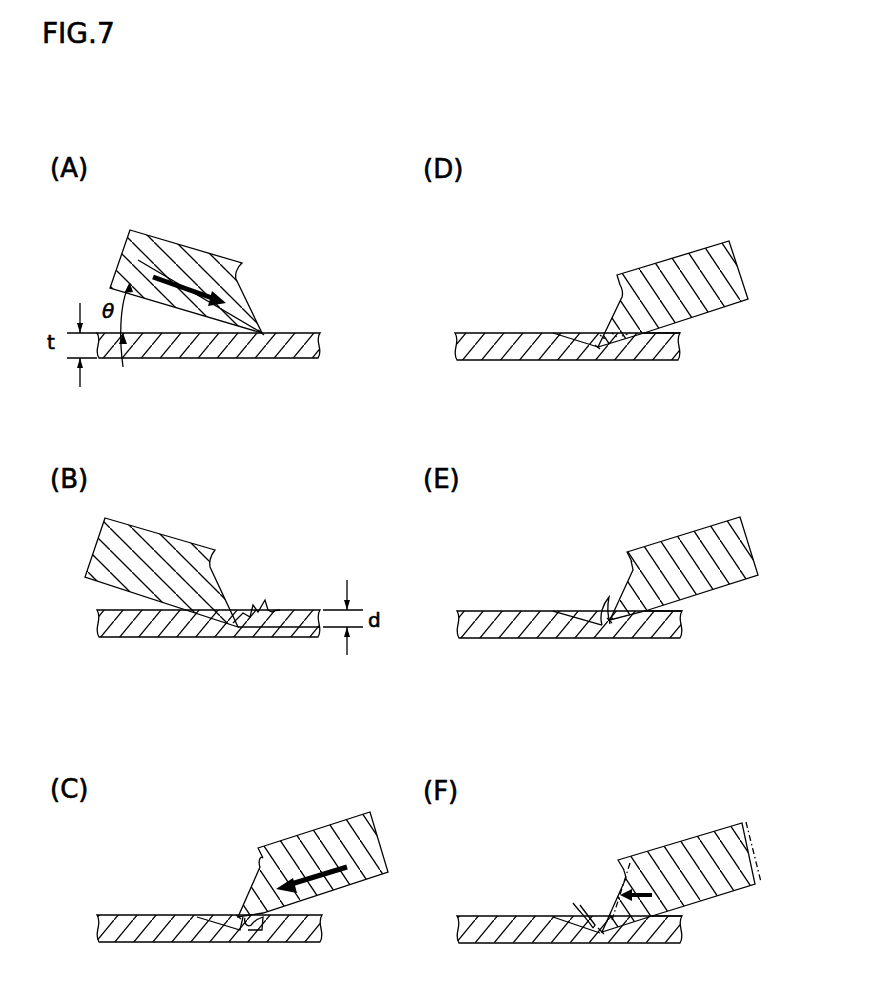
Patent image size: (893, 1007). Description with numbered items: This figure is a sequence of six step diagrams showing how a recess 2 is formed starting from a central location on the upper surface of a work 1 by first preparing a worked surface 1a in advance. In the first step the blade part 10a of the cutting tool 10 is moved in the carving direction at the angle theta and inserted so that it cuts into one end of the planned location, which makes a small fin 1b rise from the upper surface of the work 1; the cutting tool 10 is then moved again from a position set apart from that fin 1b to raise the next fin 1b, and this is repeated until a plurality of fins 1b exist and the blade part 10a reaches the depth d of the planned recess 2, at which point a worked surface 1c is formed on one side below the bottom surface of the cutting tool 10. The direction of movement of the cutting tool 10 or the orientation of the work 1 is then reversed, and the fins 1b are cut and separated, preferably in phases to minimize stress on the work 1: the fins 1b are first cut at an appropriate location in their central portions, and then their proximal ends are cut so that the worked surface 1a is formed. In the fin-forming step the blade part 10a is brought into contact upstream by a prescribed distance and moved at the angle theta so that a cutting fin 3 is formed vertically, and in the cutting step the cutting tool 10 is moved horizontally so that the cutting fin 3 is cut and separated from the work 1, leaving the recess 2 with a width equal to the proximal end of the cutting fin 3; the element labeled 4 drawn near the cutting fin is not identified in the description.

The work 1 is at (389, 662).
The worked surface 1a is at (664, 660).
The fin 1b is at (431, 619).
The worked surface 1c is at (369, 605).
The cutting tool 10 is at (423, 557).
The blade part 10a is at (411, 624).
The recess 2 is at (600, 933).
The cutting fin 3 is at (592, 613).
The chip residue 4 is at (593, 927).